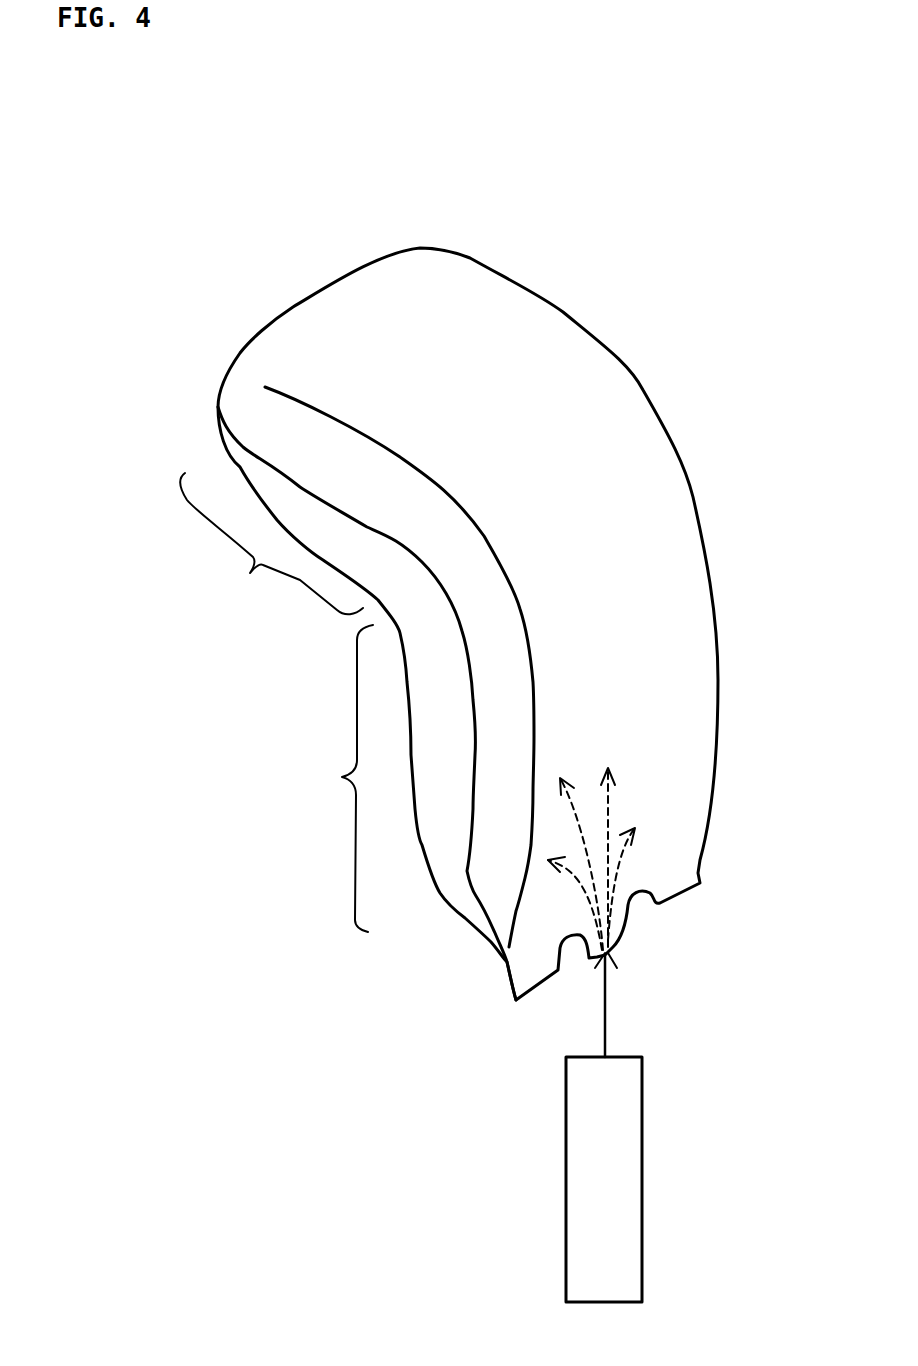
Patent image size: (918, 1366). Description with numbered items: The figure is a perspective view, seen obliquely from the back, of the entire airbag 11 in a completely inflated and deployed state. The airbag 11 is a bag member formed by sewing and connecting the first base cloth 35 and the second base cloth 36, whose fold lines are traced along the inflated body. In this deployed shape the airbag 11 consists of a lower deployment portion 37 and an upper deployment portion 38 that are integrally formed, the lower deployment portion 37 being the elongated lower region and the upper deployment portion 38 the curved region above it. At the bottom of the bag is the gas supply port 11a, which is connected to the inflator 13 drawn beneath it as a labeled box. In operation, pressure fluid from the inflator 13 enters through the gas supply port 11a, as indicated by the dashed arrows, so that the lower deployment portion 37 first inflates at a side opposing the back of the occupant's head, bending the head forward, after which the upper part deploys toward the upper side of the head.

The airbag 11 is at (690, 217).
The gas supply port 11a is at (623, 943).
The inflator 13 is at (641, 1200).
The first base cloth 35 is at (253, 470).
The second base cloth 36 is at (243, 375).
The lower deployment portion 37 is at (338, 778).
The upper deployment portion 38 is at (271, 543).